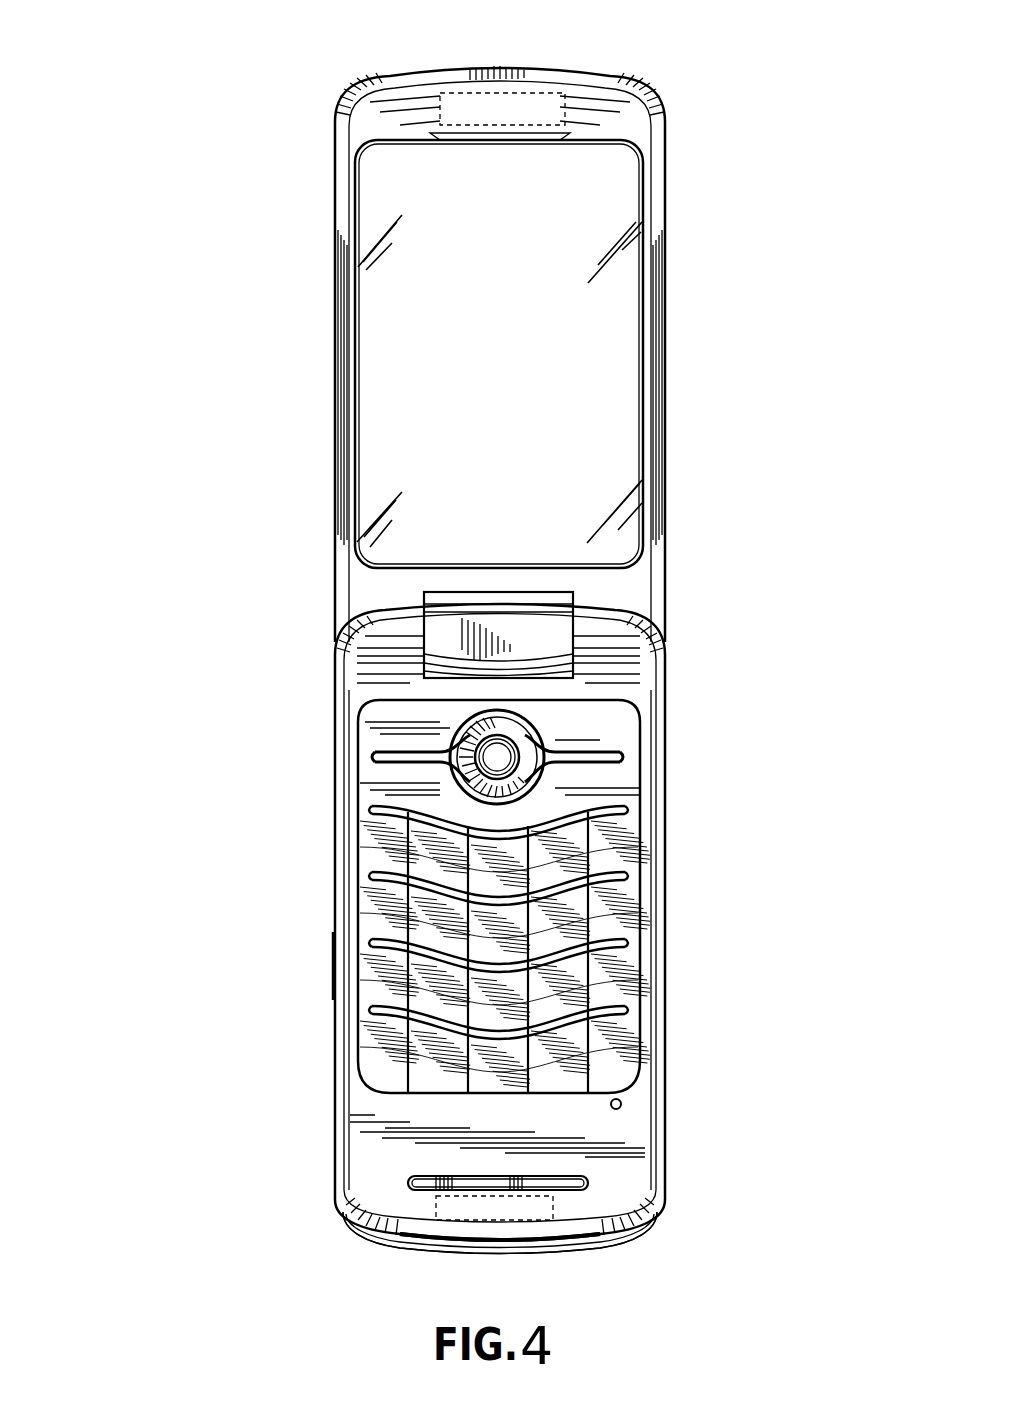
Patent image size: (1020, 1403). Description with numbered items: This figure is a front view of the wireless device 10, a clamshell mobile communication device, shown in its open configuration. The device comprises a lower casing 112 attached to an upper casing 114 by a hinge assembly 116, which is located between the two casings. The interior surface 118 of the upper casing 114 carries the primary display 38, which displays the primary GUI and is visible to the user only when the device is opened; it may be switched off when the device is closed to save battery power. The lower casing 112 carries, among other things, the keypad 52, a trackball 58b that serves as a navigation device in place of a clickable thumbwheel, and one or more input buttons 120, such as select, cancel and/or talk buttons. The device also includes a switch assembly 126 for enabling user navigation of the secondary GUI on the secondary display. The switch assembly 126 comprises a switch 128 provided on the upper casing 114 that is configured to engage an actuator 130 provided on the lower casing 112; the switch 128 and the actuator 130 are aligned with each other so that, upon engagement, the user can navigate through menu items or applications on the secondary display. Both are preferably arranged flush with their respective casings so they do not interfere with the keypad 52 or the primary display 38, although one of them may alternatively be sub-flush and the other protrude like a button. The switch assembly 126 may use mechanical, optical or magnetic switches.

The wireless device 10 is at (151, 151).
The upper casing 114 is at (678, 153).
The primary display 38 is at (605, 328).
The switch 128 is at (525, 112).
The interior surface 118 is at (626, 118).
The hinge assembly 116 is at (440, 640).
The lower casing 112 is at (320, 898).
The input buttons 120 is at (597, 728).
The trackball 58b is at (520, 776).
The keypad 52 is at (628, 890).
The actuator 130 is at (533, 1200).
The switch assembly 126 is at (406, 1258).